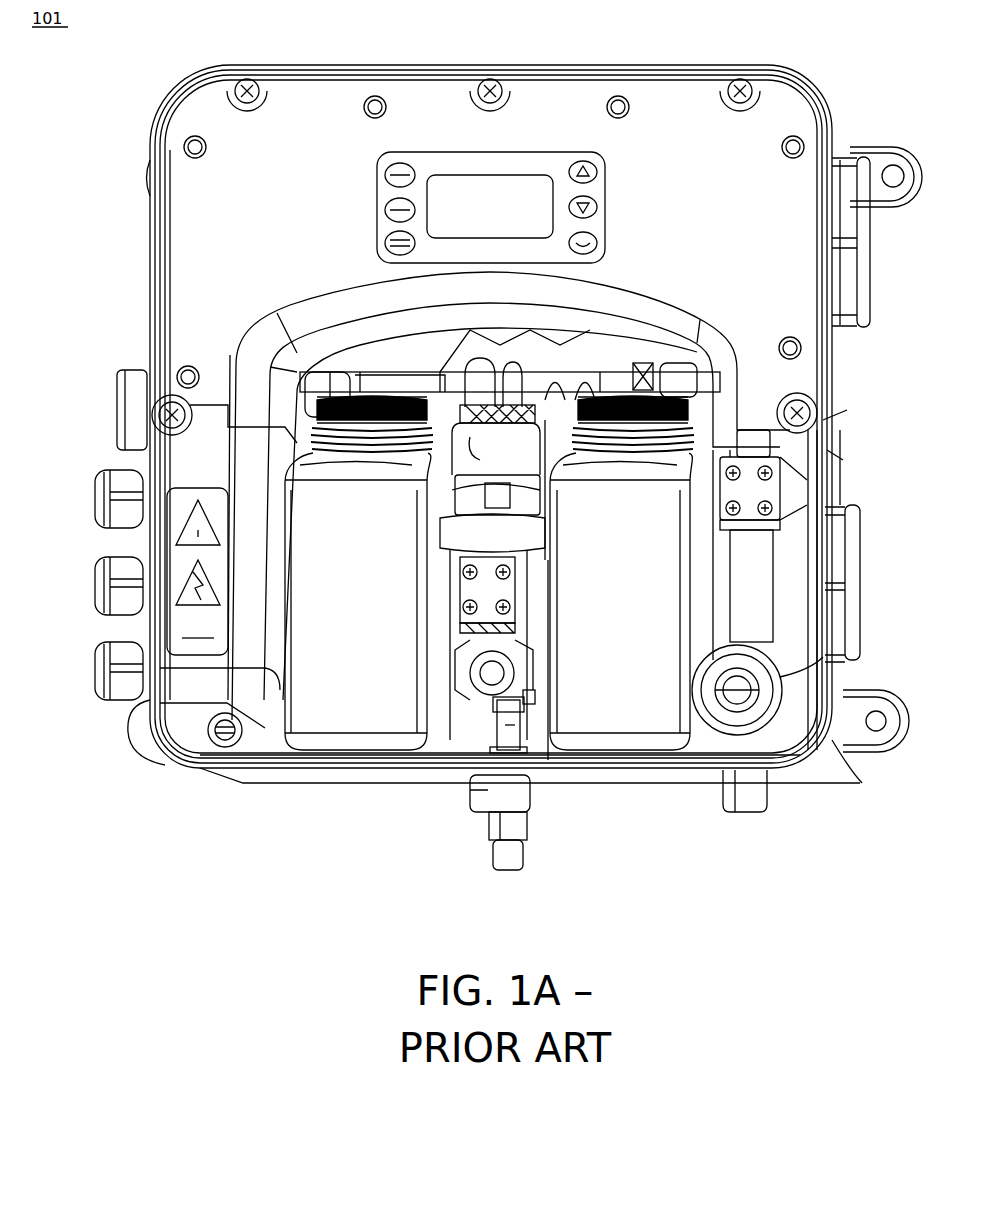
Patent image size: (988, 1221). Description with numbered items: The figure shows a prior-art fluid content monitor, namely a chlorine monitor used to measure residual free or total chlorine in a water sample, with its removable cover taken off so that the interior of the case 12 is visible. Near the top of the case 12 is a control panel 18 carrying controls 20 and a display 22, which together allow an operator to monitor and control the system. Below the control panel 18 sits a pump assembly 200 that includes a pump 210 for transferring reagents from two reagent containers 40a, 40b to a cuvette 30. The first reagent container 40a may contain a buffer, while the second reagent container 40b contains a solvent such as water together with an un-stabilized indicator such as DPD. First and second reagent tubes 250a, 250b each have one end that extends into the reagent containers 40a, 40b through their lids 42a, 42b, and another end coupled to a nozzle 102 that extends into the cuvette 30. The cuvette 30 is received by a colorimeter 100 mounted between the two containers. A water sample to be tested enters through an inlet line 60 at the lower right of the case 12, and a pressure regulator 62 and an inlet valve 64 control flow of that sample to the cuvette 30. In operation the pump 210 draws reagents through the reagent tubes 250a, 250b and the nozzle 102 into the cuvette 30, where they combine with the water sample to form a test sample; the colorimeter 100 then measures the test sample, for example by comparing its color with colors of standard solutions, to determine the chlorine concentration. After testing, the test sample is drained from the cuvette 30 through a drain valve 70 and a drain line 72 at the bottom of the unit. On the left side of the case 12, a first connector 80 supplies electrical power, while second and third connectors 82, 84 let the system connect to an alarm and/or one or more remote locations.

The case 12 is at (810, 92).
The control panel 18 is at (610, 165).
The controls 20 is at (600, 212).
The display 22 is at (487, 185).
The pump assembly 200 is at (505, 340).
The pump 210 is at (508, 325).
The first reagent tube 250a is at (478, 355).
The second reagent tube 250b is at (515, 350).
The colorimeter 100 is at (463, 535).
The nozzle 102 is at (480, 440).
The cuvette 30 is at (500, 500).
The reagent container 40a is at (385, 712).
The reagent container 40b is at (597, 708).
The lid 42a is at (373, 430).
The lid 42b is at (680, 445).
The drain valve 70 is at (470, 648).
The drain line 72 is at (513, 725).
The inlet valve 64 is at (792, 497).
The pressure regulator 62 is at (782, 690).
The inlet line 60 is at (770, 790).
The first connector 80 is at (97, 490).
The second connector 82 is at (97, 583).
The third connector 84 is at (97, 665).